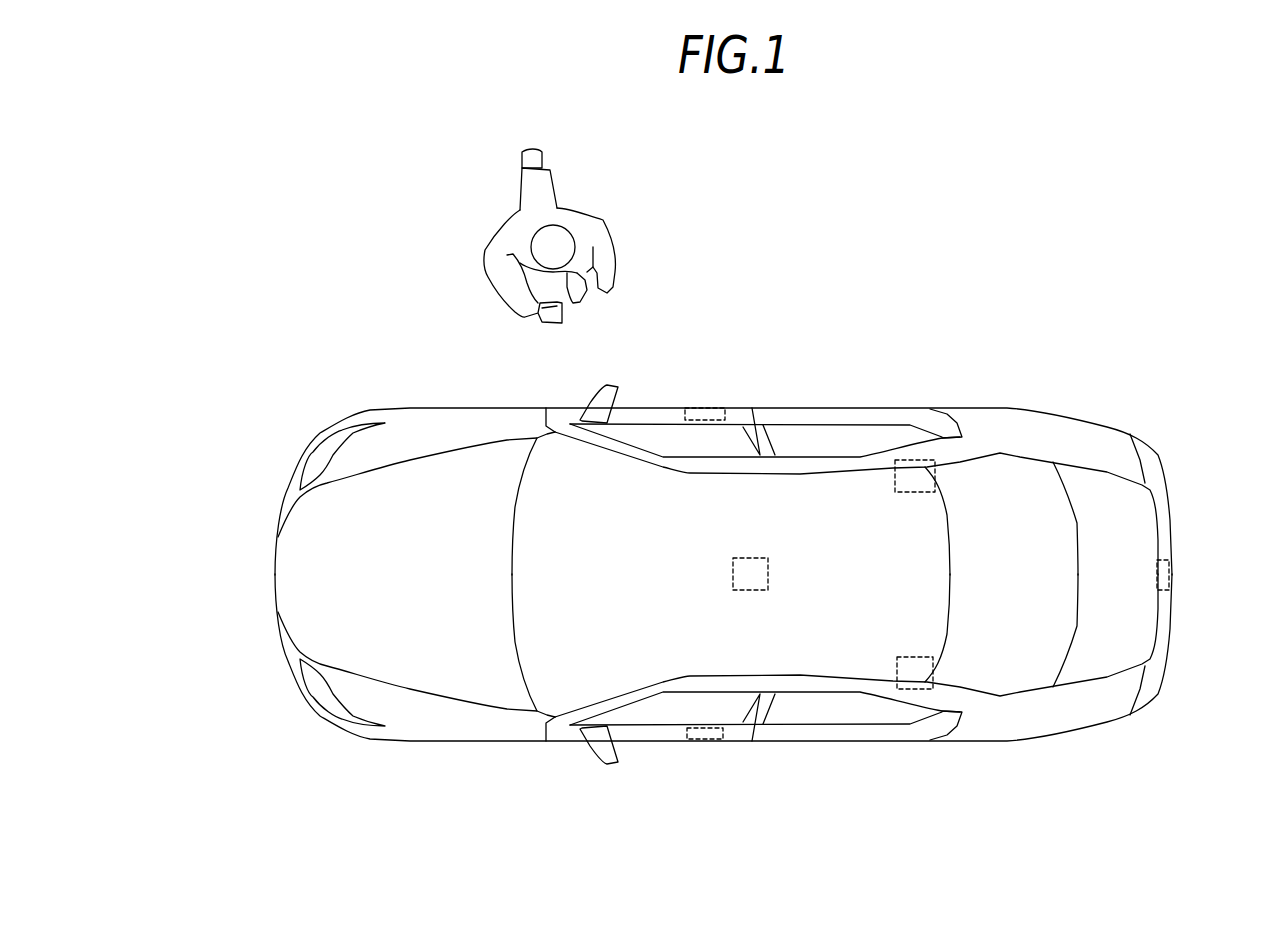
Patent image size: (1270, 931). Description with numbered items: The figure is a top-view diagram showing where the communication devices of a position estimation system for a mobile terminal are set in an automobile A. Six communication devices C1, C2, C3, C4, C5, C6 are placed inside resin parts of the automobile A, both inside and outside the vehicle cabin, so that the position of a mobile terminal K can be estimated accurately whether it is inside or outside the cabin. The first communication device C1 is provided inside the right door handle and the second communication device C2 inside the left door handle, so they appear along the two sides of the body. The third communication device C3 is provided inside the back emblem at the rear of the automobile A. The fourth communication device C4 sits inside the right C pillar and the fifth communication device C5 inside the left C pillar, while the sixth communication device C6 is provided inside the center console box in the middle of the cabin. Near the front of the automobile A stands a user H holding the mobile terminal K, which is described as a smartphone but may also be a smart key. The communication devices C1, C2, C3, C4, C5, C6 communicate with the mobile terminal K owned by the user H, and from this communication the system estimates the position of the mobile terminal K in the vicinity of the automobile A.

The automobile A is at (335, 365).
The user H is at (562, 210).
The mobile terminal K is at (548, 323).
The first communication device C1 is at (728, 408).
The second communication device C2 is at (687, 733).
The third communication device C3 is at (1160, 560).
The fourth communication device C4 is at (895, 485).
The fifth communication device C5 is at (913, 657).
The sixth communication device C6 is at (733, 578).